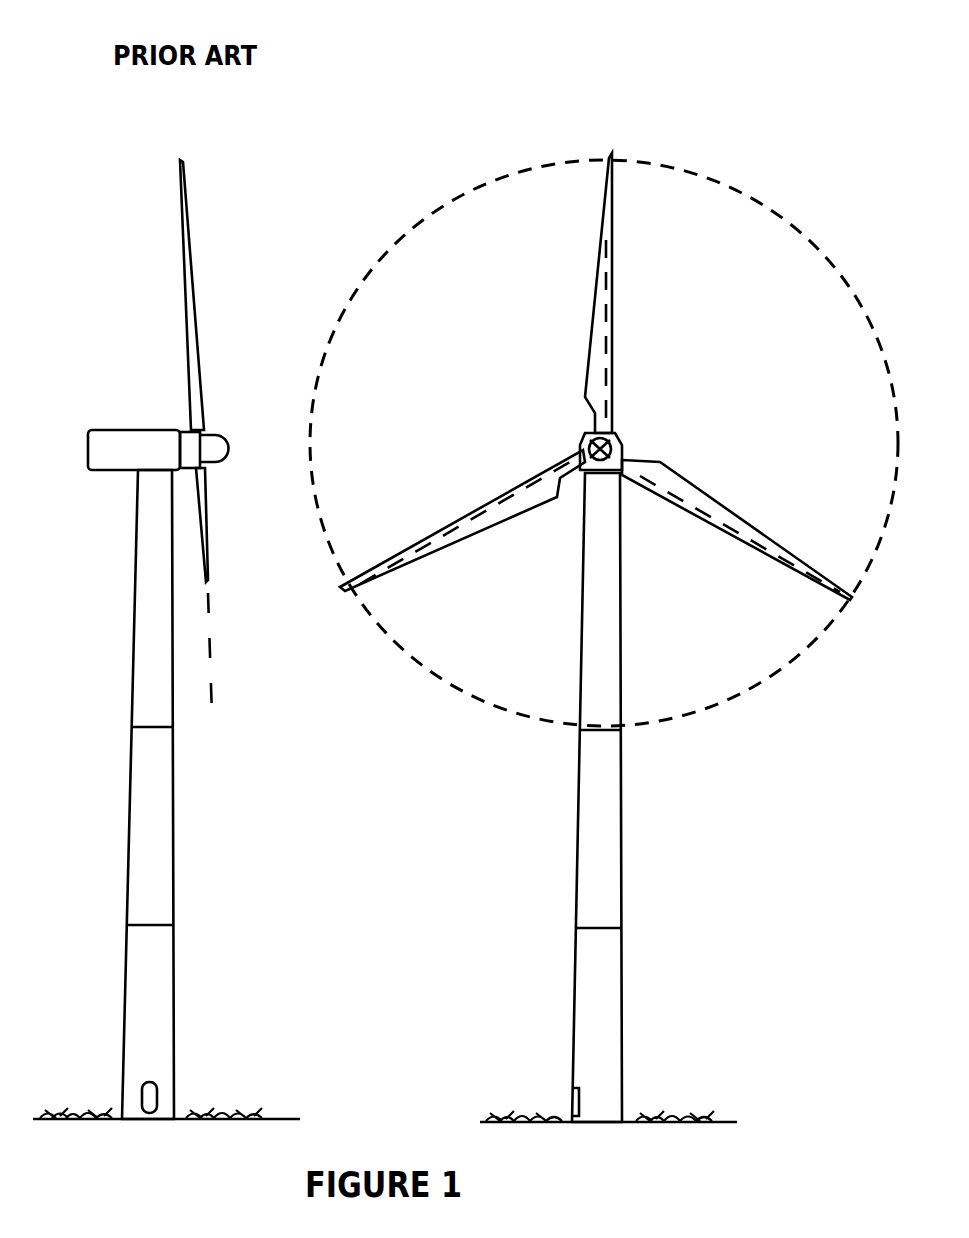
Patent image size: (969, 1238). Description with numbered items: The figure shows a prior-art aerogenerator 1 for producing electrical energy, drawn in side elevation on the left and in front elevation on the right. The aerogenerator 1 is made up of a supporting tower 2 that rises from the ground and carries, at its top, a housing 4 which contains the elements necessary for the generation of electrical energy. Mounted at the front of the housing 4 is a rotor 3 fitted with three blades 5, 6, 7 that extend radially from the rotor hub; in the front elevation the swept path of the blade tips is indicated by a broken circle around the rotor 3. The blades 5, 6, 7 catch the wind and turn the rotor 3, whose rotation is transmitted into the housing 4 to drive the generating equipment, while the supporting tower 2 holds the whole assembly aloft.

The aerogenerator 1 is at (123, 583).
The supporting tower 2 is at (120, 812).
The rotor 3 is at (232, 452).
The housing 4 is at (85, 452).
The blade 5 is at (618, 241).
The blade 6 is at (769, 541).
The blade 7 is at (420, 540).